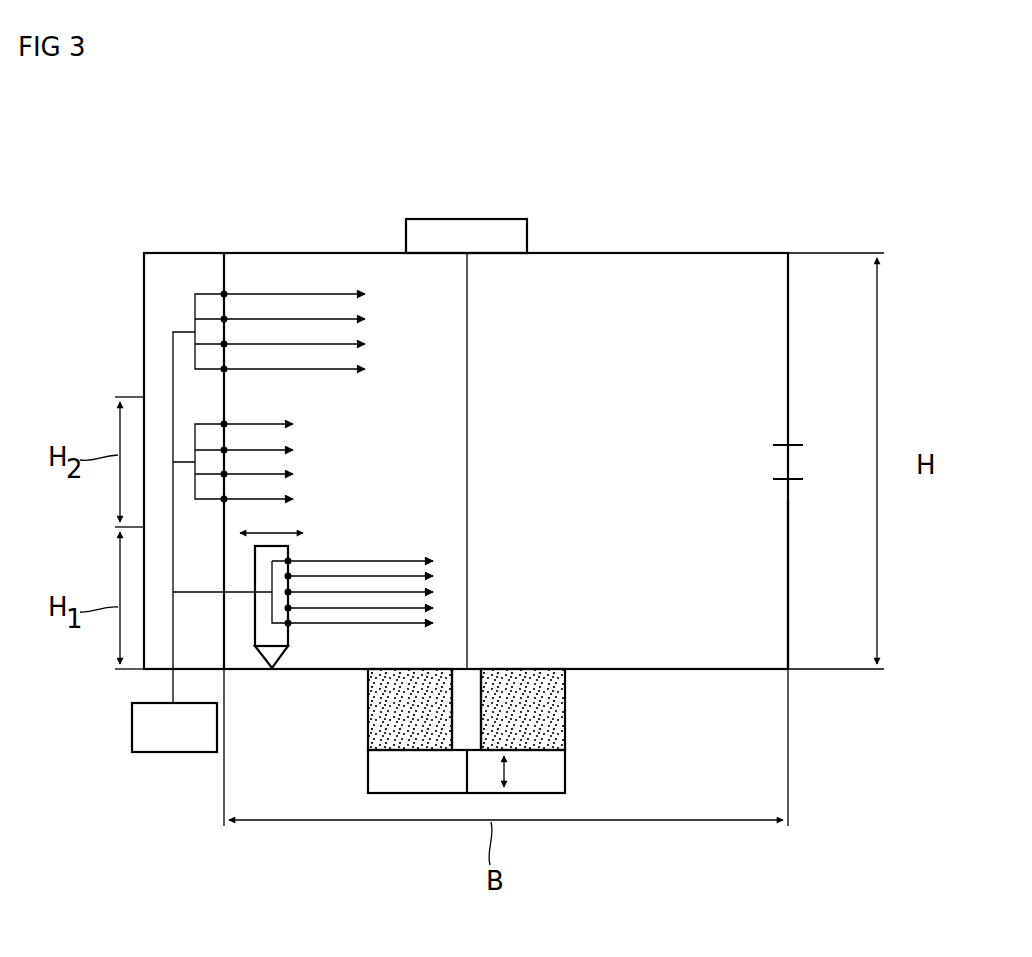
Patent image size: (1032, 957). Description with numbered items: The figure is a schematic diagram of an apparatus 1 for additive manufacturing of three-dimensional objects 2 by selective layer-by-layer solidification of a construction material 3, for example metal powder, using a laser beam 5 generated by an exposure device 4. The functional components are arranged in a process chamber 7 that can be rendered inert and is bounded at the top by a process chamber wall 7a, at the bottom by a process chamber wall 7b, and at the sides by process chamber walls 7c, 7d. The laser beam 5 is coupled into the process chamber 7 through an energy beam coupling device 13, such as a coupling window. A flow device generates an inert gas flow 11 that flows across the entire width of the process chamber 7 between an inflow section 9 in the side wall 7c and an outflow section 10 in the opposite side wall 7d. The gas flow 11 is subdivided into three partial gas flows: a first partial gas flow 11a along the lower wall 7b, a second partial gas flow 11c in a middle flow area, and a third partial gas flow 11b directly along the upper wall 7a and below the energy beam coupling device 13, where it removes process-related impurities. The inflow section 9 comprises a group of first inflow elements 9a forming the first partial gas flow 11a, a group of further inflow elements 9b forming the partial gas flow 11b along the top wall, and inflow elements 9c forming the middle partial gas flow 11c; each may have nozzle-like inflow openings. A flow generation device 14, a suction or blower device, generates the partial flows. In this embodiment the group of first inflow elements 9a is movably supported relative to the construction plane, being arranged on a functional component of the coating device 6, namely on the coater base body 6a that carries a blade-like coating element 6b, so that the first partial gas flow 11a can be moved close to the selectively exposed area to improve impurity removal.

The apparatus 1 is at (802, 192).
The three-dimensional object 2 is at (473, 682).
The construction material 3 is at (552, 705).
The exposure device 4 is at (485, 218).
The laser beam 5 is at (469, 456).
The coating device 6 is at (303, 628).
The coater base body 6a is at (293, 632).
The coating element 6b is at (285, 660).
The process chamber 7 is at (802, 318).
The process chamber wall 7a is at (689, 252).
The process chamber wall 7b is at (691, 671).
The process chamber wall 7c is at (223, 392).
The process chamber wall 7d is at (790, 545).
The inflow section 9 is at (269, 432).
The first inflow elements 9a is at (303, 548).
The further inflow elements 9b is at (232, 289).
The inflow elements 9c is at (240, 410).
The outflow section 10 is at (755, 463).
The inert gas flow 11 is at (381, 381).
The first partial gas flow 11a is at (395, 545).
The second partial gas flow 11b is at (381, 306).
The second partial gas flow 11c is at (333, 447).
The energy beam coupling device 13 is at (508, 268).
The flow generation device 14 is at (172, 753).